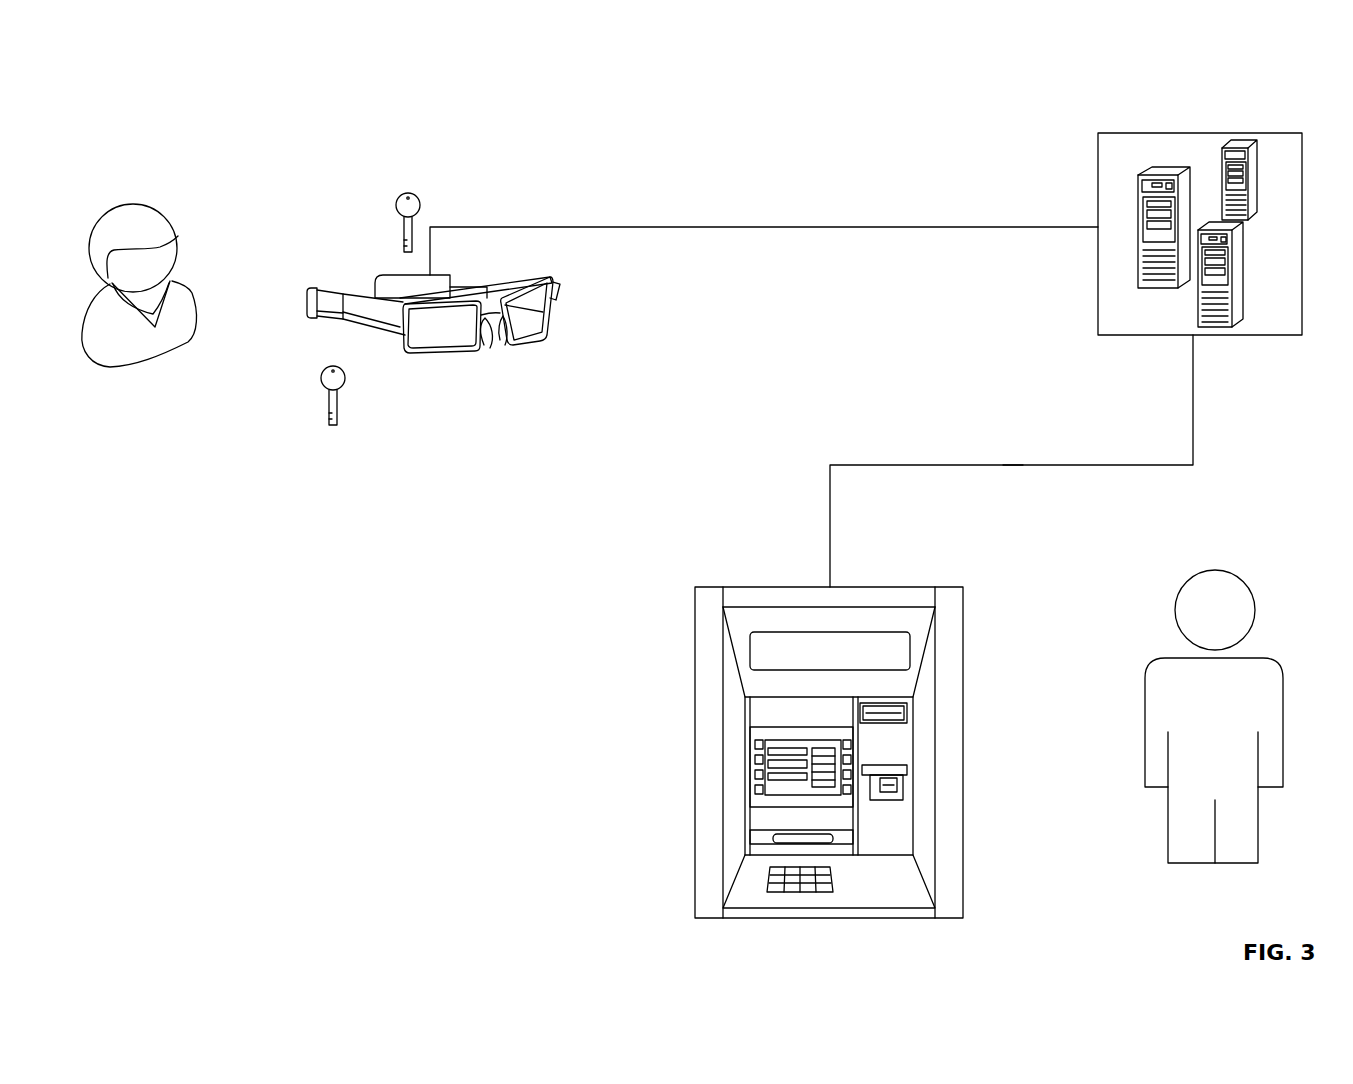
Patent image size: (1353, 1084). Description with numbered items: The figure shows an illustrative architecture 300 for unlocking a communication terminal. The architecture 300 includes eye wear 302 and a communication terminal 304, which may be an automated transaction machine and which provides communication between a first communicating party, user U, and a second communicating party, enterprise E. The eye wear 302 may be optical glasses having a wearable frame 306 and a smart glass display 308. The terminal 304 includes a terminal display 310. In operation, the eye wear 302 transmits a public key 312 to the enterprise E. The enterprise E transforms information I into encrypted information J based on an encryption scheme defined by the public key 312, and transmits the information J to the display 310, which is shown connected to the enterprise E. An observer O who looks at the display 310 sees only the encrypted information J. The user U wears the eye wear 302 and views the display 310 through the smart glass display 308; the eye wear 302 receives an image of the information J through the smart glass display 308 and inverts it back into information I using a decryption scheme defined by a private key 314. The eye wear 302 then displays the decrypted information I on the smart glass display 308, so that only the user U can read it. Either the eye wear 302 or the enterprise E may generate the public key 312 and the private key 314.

The architecture 300 is at (1212, 76).
The eye wear 302 is at (436, 312).
The communication terminal 304 is at (834, 752).
The wearable frame 306 is at (343, 318).
The smart glass display 308 is at (546, 314).
The terminal display 310 is at (750, 786).
The public key 312 is at (414, 193).
The private key 314 is at (324, 406).
The user U is at (188, 287).
The enterprise E is at (1098, 323).
The information J is at (670, 797).
The observer O is at (1145, 748).